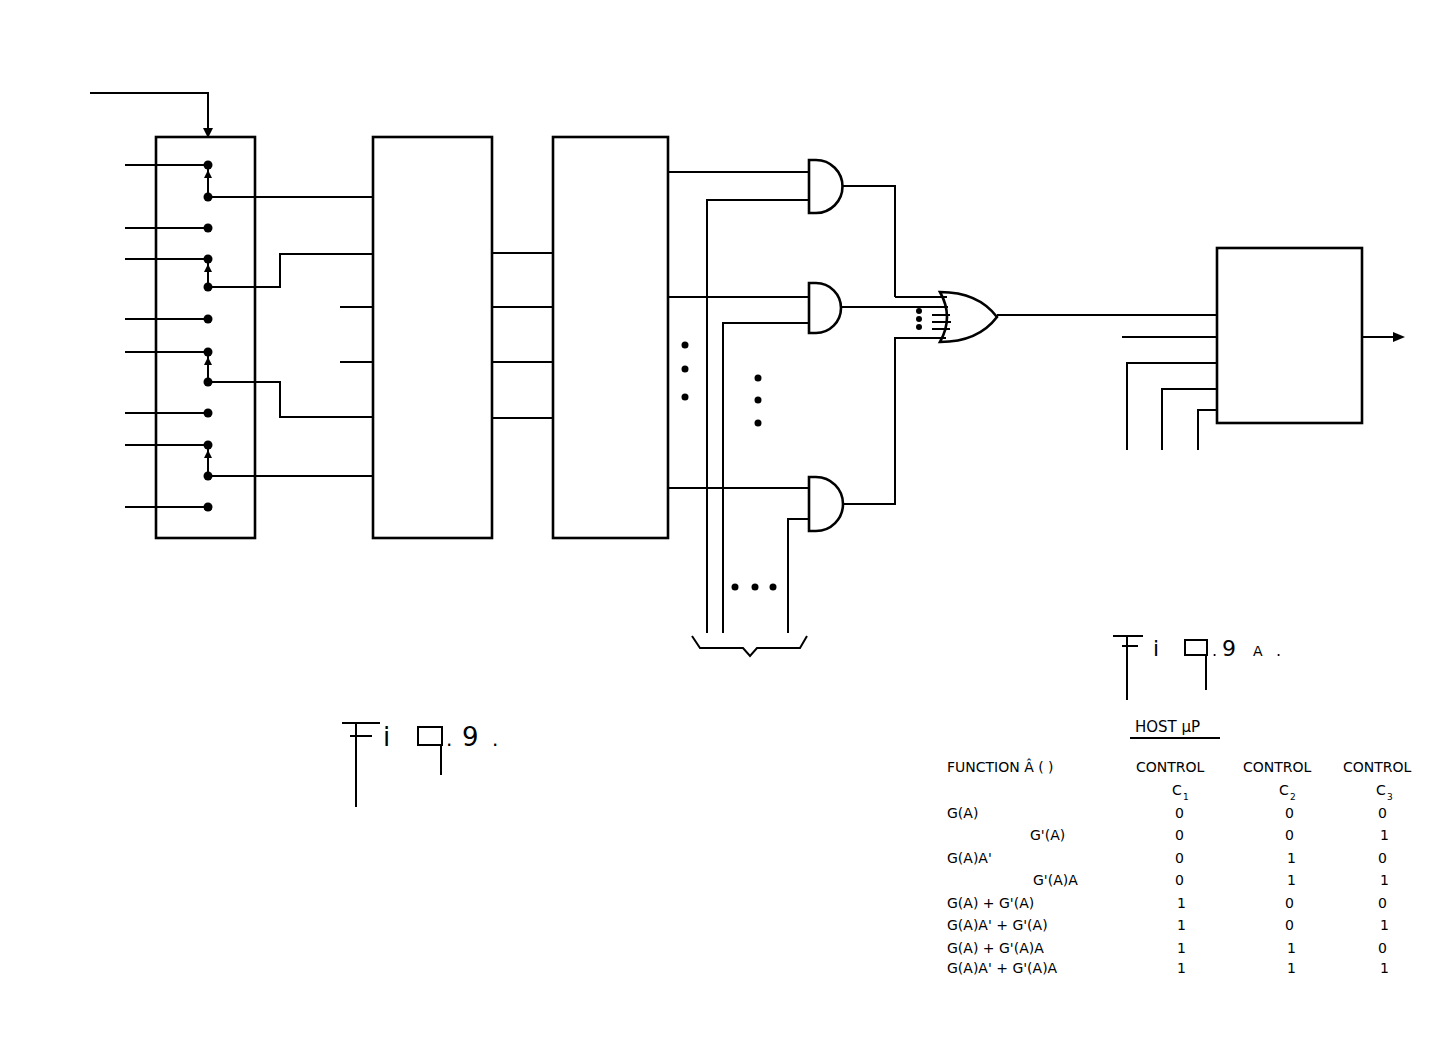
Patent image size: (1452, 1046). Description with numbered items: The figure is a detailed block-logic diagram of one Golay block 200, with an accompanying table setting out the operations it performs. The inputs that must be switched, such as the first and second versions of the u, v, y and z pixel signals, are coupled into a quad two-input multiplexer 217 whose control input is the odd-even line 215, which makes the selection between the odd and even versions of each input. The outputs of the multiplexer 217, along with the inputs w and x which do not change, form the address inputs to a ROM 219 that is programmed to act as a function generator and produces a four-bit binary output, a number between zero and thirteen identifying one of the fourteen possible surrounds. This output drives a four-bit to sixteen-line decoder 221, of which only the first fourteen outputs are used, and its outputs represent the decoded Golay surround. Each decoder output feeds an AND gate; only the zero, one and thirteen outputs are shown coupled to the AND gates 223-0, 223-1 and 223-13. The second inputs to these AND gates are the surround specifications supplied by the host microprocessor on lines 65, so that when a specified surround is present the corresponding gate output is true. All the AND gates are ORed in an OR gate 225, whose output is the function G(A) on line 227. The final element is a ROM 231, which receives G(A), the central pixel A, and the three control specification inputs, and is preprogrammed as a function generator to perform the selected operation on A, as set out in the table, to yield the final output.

The Golay block 200 is at (556, 608).
The odd-even line 215 is at (211, 97).
The quad 2 input multiplexer 217 is at (258, 538).
The ROM 219 is at (428, 540).
The 4 bit to 16 line decoder 221 is at (603, 540).
The AND gate 223-0 is at (852, 218).
The AND gate 223-1 is at (812, 338).
The AND gate 223-13 is at (848, 468).
The OR gate 225 is at (962, 291).
The line 227 is at (1108, 311).
The ROM 231 is at (1292, 246).
The lines 65 is at (800, 649).